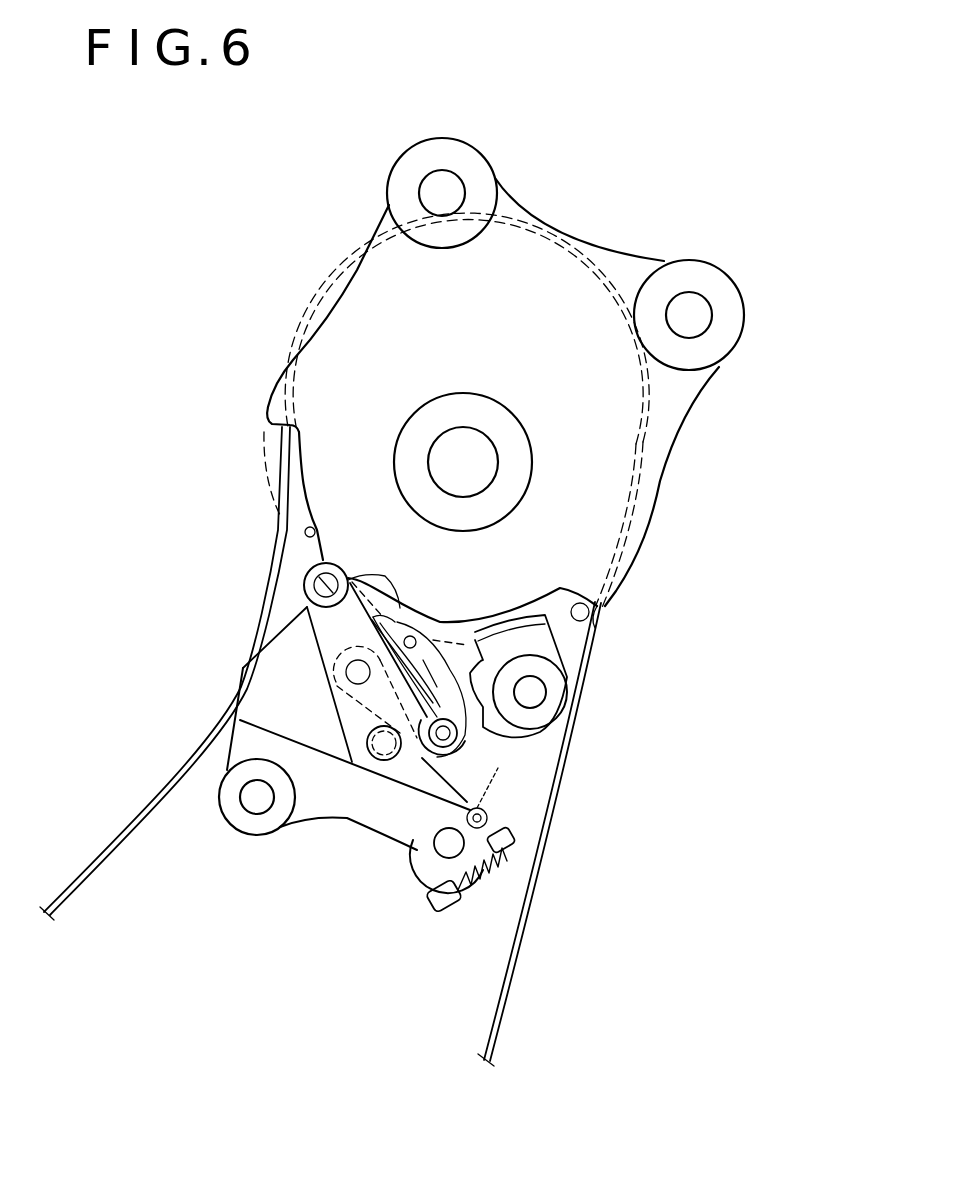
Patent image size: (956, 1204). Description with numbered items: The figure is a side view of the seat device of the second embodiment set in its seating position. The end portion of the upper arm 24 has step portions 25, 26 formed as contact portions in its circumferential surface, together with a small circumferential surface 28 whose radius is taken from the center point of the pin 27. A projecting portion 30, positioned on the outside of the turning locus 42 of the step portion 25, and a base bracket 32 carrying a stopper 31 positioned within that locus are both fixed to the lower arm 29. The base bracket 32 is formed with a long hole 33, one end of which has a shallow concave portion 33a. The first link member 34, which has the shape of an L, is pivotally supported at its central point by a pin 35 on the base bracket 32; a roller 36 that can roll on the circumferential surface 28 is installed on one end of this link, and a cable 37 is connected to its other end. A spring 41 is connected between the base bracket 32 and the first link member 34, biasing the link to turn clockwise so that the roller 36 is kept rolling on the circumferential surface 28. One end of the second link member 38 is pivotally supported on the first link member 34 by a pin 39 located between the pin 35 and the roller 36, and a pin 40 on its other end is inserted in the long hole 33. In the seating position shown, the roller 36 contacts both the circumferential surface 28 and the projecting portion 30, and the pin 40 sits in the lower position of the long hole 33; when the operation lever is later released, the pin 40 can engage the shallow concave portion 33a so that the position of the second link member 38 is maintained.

The upper arm 24 is at (352, 260).
The step portion 25 is at (271, 447).
The step portion 26 is at (597, 625).
The pin 27 is at (490, 438).
The small circumferential surface 28 is at (316, 528).
The lower arm 29 is at (185, 755).
The projecting portion 30 is at (388, 574).
The stopper 31 is at (526, 626).
The base bracket 32 is at (370, 840).
The long hole 33 is at (431, 640).
The shallow concave portion 33a is at (376, 608).
The first link member 34 is at (305, 647).
The pin 35 is at (378, 750).
The roller 36 is at (304, 582).
The cable 37 is at (498, 790).
The second link member 38 is at (440, 690).
The pin 39 is at (346, 673).
The pin 40 is at (458, 738).
The spring 41 is at (483, 888).
The turning locus 42 is at (263, 440).